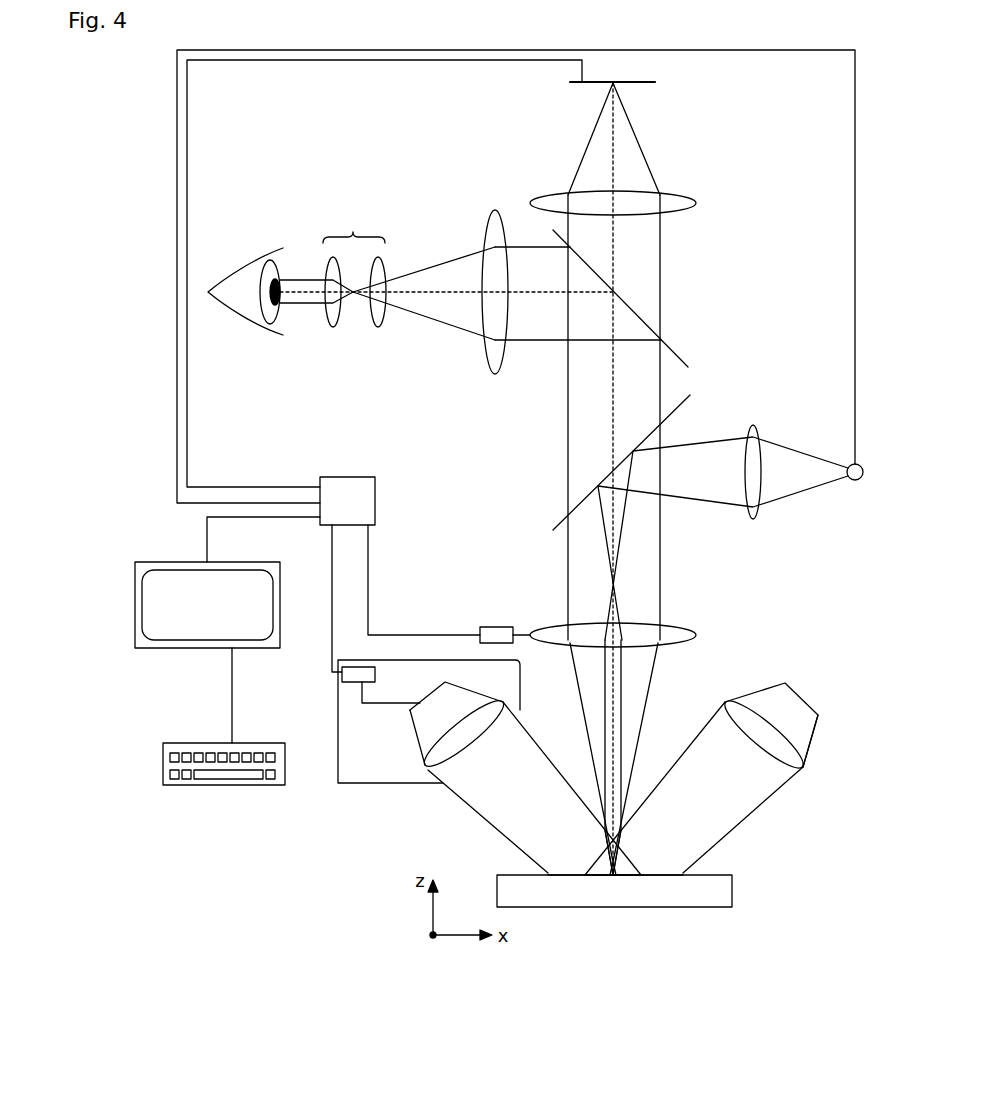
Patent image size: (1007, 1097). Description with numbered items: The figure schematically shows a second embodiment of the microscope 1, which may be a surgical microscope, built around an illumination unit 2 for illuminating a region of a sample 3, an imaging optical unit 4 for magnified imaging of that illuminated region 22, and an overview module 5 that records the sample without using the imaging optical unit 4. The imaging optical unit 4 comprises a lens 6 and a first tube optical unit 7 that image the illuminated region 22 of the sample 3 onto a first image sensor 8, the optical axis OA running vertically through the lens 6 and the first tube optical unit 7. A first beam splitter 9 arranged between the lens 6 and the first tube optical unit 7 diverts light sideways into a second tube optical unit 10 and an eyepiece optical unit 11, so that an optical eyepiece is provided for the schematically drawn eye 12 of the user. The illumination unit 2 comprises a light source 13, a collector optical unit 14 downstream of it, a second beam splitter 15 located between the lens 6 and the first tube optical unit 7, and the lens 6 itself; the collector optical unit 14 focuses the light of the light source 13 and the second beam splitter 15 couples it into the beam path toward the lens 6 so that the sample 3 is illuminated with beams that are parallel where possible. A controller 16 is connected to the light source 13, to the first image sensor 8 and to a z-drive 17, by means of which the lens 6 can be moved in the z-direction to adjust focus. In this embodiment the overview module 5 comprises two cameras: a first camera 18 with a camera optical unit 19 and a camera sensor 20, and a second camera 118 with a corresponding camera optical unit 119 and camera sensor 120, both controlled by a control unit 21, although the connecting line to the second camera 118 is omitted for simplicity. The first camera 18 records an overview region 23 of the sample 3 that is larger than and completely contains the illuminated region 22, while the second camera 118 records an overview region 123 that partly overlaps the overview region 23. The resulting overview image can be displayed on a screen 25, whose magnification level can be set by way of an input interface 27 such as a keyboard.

The microscope 1 is at (603, 518).
The illumination unit 2 is at (730, 610).
The sample 3 is at (735, 882).
The imaging optical unit 4 is at (657, 659).
The overview module 5 is at (468, 756).
The lens 6 is at (697, 632).
The first tube optical unit 7 is at (530, 202).
The first image sensor 8 is at (640, 86).
The first beam splitter 9 is at (680, 348).
The second tube optical unit 10 is at (485, 227).
The eyepiece optical unit 11 is at (333, 265).
The eye 12 is at (237, 270).
The light source 13 is at (855, 485).
The collector optical unit 14 is at (753, 522).
The second beam splitter 15 is at (557, 520).
The controller 16 is at (340, 477).
The z-drive 17 is at (495, 627).
The camera 18 is at (420, 768).
The camera optical unit 19 is at (455, 752).
The camera sensor 20 is at (443, 682).
The control unit 21 is at (352, 683).
The illuminated region 22 is at (617, 880).
The overview region 23 is at (600, 880).
The screen 25 is at (203, 650).
The input interface 27 is at (193, 787).
The second camera 118 is at (810, 770).
The camera optical unit 119 is at (780, 766).
The camera sensor 120 is at (812, 700).
The overview region 123 is at (683, 877).
The optical axis OA is at (613, 433).